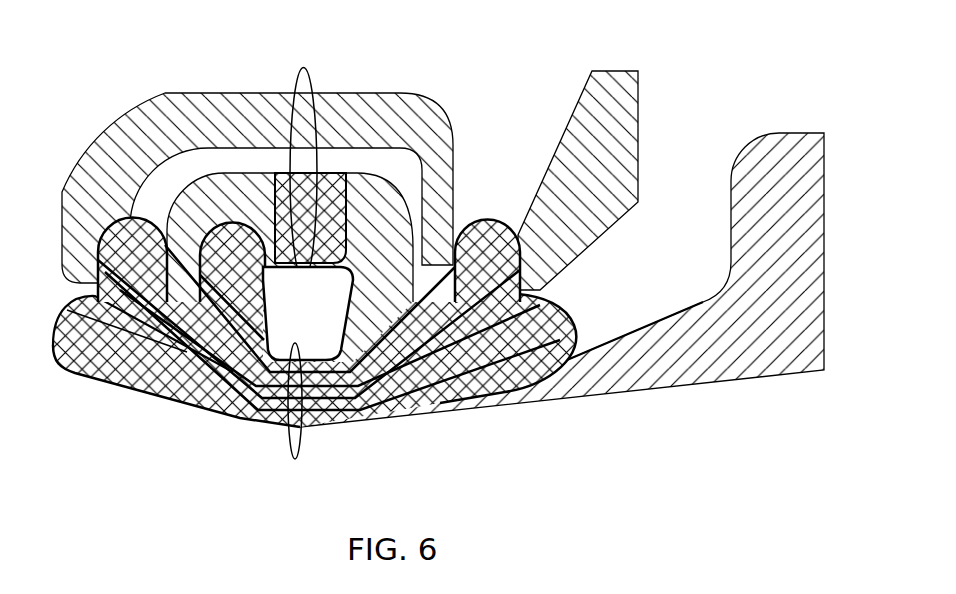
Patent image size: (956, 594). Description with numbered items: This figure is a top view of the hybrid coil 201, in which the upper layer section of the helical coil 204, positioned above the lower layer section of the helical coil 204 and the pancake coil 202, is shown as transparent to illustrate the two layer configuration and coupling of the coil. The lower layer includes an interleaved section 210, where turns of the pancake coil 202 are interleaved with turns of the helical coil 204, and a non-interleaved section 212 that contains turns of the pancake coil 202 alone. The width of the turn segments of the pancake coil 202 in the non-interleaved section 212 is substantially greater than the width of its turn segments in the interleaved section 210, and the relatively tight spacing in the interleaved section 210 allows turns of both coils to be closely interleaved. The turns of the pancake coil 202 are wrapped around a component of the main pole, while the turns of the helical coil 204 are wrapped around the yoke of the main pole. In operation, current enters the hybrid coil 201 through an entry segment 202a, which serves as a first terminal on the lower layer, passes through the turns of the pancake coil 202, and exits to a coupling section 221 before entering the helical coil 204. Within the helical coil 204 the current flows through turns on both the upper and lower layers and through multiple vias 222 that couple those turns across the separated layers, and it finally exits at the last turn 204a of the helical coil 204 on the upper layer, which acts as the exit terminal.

The hybrid coil 201 is at (712, 113).
The pancake coil 202 is at (390, 92).
The entry segment 202a is at (597, 242).
The helical coil 204 is at (182, 404).
The last turn 204a is at (720, 385).
The interleaved section 210 is at (296, 460).
The non-interleaved section 212 is at (303, 67).
The coupling section 221 is at (308, 313).
The vias 222 is at (483, 220).